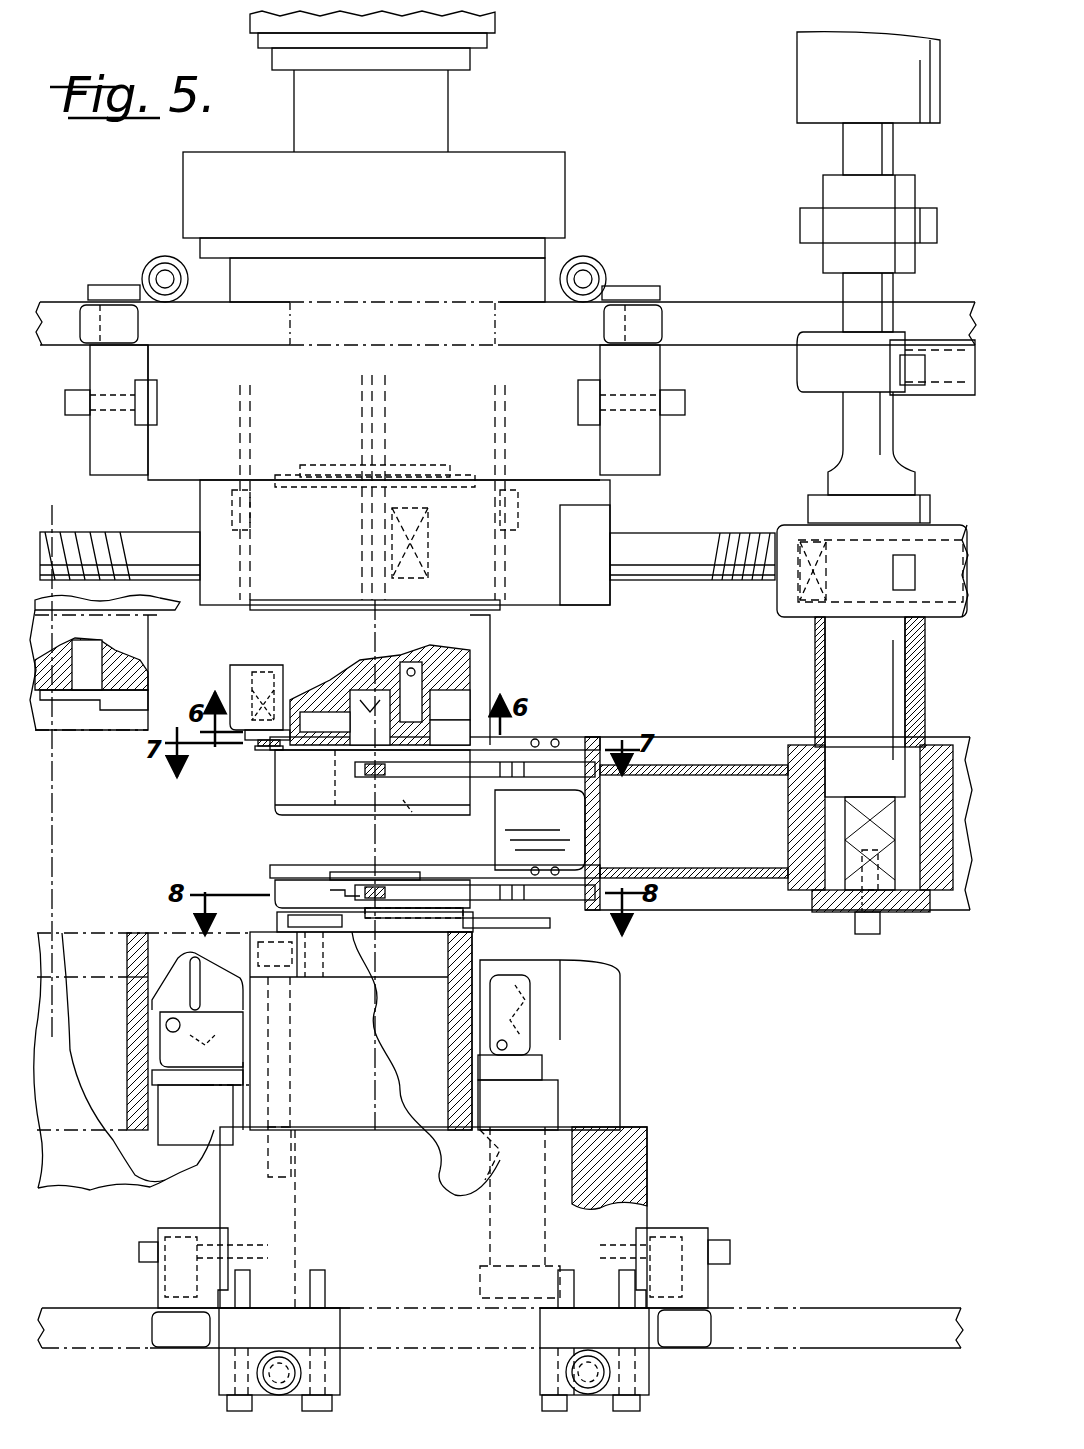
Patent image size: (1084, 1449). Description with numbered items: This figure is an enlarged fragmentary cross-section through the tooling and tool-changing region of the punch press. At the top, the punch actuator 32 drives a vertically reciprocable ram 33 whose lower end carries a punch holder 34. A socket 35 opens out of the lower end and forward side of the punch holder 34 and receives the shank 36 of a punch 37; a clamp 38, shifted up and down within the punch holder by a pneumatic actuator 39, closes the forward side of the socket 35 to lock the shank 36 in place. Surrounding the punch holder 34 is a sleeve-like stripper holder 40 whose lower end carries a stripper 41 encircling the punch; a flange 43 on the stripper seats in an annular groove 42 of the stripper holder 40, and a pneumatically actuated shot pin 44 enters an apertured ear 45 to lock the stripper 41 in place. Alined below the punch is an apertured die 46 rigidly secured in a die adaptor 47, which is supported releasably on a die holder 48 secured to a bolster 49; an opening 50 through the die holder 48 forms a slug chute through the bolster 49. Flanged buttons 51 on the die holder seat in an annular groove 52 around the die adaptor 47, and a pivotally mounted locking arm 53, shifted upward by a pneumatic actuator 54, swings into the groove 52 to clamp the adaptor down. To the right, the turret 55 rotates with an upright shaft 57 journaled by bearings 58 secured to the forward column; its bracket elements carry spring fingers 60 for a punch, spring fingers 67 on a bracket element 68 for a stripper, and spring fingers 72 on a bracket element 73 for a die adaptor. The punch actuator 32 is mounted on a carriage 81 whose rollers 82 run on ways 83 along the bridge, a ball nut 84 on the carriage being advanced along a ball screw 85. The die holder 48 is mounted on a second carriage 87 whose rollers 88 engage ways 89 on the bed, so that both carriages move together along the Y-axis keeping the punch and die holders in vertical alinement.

The punch actuator 32 is at (574, 182).
The ram 33 is at (492, 430).
The punch holder 34 is at (352, 676).
The socket 35 is at (432, 695).
The shank 36 is at (348, 688).
The punch 37 is at (406, 802).
The clamp 38 is at (462, 722).
The pneumatic actuator 39 is at (396, 550).
The stripper holder 40 is at (476, 640).
The stripper 41 is at (282, 815).
The annular groove 42 is at (292, 748).
The flange 43 is at (338, 756).
The shot pin 44 is at (272, 742).
The apertured ear 45 is at (282, 750).
The die 46 is at (340, 878).
The die adaptor 47 is at (300, 892).
The die holder 48 is at (337, 978).
The bolster 49 is at (460, 1062).
The opening 50 is at (430, 960).
The flanged buttons 51 is at (288, 920).
The annular groove 52 is at (413, 935).
The locking arm 53 is at (536, 922).
The pneumatic actuator 54 is at (495, 1160).
The turret 55 is at (598, 734).
The upright shaft 57 is at (832, 686).
The bearings 58 is at (812, 380).
The spring fingers 60 is at (520, 742).
The spring fingers 67 is at (472, 786).
The bracket element 68 is at (594, 762).
The spring fingers 72 is at (422, 885).
The bracket element 73 is at (590, 835).
The carriage 81 is at (305, 352).
The rollers 82 is at (158, 258).
The ways 83 is at (60, 312).
The ball nut 84 is at (590, 520).
The ball screw 85 is at (694, 580).
The second carriage 87 is at (642, 1170).
The rollers 88 is at (172, 1345).
The ways 89 is at (92, 1312).